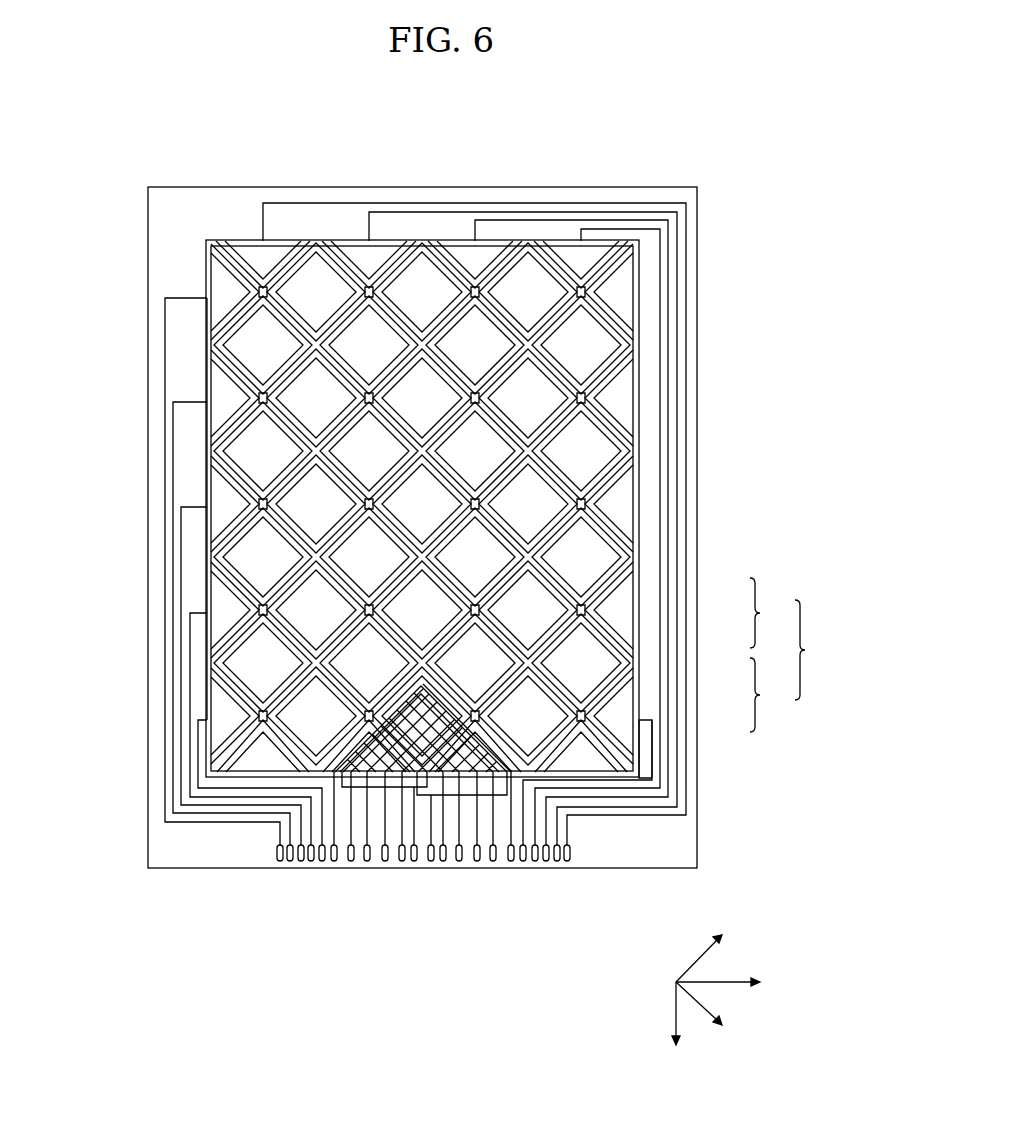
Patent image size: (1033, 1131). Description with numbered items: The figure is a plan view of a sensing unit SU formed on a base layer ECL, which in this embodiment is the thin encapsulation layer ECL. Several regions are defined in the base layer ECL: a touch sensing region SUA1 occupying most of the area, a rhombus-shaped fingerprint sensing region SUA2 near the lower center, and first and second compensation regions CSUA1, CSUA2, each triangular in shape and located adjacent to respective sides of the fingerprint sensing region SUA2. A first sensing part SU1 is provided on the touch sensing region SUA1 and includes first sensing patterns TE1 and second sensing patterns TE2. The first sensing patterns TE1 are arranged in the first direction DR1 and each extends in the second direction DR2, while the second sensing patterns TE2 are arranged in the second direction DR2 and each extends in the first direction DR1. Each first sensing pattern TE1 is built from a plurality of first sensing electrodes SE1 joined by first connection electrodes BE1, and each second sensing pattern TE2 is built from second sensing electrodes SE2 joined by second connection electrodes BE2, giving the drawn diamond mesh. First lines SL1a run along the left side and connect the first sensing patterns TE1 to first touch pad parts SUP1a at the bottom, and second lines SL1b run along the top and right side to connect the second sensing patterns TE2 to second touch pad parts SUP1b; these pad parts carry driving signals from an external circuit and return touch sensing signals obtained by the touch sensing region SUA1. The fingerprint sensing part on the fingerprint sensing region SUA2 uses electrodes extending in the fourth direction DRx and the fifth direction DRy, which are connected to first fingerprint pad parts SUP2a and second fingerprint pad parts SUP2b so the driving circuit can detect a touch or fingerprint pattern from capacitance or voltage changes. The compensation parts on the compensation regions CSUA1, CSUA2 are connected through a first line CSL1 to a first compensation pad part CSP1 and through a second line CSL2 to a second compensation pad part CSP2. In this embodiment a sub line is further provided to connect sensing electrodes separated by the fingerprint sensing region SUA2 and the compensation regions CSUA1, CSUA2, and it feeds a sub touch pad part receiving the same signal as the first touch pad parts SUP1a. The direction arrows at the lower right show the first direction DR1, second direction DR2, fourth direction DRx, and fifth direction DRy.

The sensing unit SU is at (648, 162).
The base layer (thin encapsulation layer) ECL is at (148, 266).
The touch sensing region SUA1 is at (633, 735).
The fingerprint sensing region SUA2 is at (300, 632).
The first sensing electrodes SE1 is at (600, 572).
The second sensing electrodes SE2 is at (612, 655).
The first connection electrodes BE1 is at (600, 590).
The second connection electrodes BE2 is at (605, 665).
The first sensing patterns TE1 is at (772, 613).
The second sensing patterns TE2 is at (772, 695).
The first sensing part SU1 is at (818, 650).
The first lines SL1a is at (165, 594).
The second lines SL1b is at (686, 548).
The first compensation region CSUA1 is at (340, 728).
The second compensation region CSUA2 is at (652, 760).
The first line (compensation) CSL1 is at (414, 828).
The second line (compensation) CSL2 is at (490, 832).
The first touch pad parts SUP1a is at (322, 872).
The first fingerprint pad parts SUP2a is at (402, 872).
The first compensation pad part CSP1 is at (414, 862).
The second compensation pad part CSP2 is at (431, 862).
The second fingerprint pad parts SUP2b is at (511, 872).
The second touch pad parts SUP1b is at (568, 872).
The first direction DR1 is at (678, 1026).
The second direction DR2 is at (738, 982).
The fourth direction DRx is at (718, 952).
The fifth direction DRy is at (710, 1017).